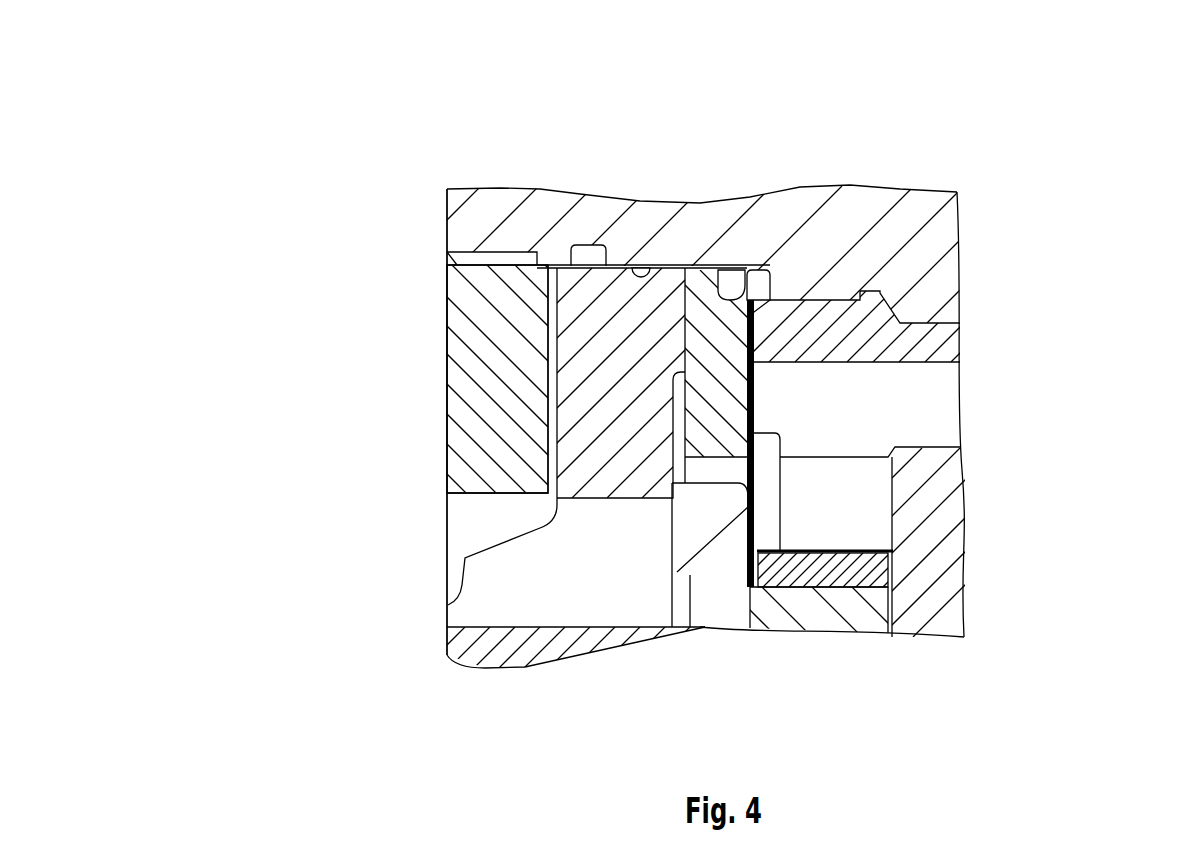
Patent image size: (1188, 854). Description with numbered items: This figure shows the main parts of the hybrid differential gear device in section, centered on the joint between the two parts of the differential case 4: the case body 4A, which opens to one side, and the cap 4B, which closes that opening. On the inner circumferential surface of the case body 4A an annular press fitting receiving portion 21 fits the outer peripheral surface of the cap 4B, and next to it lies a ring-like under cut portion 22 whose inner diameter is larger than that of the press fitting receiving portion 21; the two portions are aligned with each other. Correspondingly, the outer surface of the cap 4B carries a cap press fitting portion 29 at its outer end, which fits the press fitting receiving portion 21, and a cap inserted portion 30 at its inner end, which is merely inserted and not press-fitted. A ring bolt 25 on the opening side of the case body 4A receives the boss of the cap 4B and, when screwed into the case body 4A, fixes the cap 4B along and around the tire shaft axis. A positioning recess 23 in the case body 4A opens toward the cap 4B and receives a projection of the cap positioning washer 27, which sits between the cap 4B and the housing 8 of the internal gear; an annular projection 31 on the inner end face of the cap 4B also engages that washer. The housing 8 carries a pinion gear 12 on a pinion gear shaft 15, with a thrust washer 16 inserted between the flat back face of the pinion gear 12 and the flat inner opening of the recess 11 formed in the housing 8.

The differential case 4 is at (240, 207).
The case body 4A is at (437, 216).
The cap 4B is at (509, 510).
The housing 8 is at (956, 200).
The recess 11 is at (900, 365).
The pinion gear 12 is at (860, 617).
The pinion gear shaft 15 is at (928, 600).
The thrust washer 16 is at (823, 610).
The press fitting receiving portion 21 is at (637, 266).
The under cut portion 22 is at (684, 268).
The positioning recess 23 is at (775, 268).
The ring bolt 25 is at (447, 452).
The cap positioning washer 27 is at (728, 268).
The cap press fitting portion 29 is at (613, 265).
The cap inserted portion 30 is at (676, 266).
The annular projection 31 is at (703, 520).